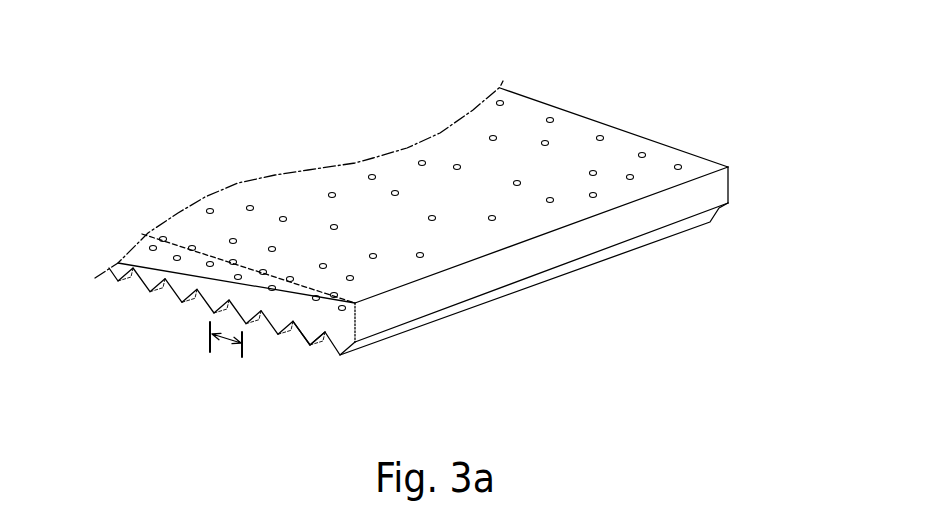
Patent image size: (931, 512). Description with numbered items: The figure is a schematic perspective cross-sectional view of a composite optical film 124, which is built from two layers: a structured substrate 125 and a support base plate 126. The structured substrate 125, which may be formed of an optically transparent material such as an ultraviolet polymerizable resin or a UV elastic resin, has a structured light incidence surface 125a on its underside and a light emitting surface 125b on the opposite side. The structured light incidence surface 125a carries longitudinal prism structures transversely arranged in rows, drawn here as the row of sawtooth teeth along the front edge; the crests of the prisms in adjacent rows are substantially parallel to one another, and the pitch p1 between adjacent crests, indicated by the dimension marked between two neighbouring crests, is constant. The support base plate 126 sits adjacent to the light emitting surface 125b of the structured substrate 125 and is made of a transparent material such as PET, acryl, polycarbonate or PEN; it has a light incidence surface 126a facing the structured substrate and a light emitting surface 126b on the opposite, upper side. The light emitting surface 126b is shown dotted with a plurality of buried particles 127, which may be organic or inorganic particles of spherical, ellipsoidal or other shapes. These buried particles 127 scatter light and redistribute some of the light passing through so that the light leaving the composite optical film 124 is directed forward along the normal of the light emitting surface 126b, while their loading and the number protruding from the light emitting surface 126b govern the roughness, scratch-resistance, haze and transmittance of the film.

The composite optical film 124 is at (447, 179).
The structured substrate 125 is at (346, 344).
The structured light incidence surface 125a is at (394, 335).
The light emitting surface 125b is at (315, 336).
The support base plate 126 is at (458, 290).
The light incidence surface 126a is at (142, 262).
The light emitting surface 126b is at (284, 186).
The buried particles 127 is at (205, 251).
The pitch p1 is at (226, 357).